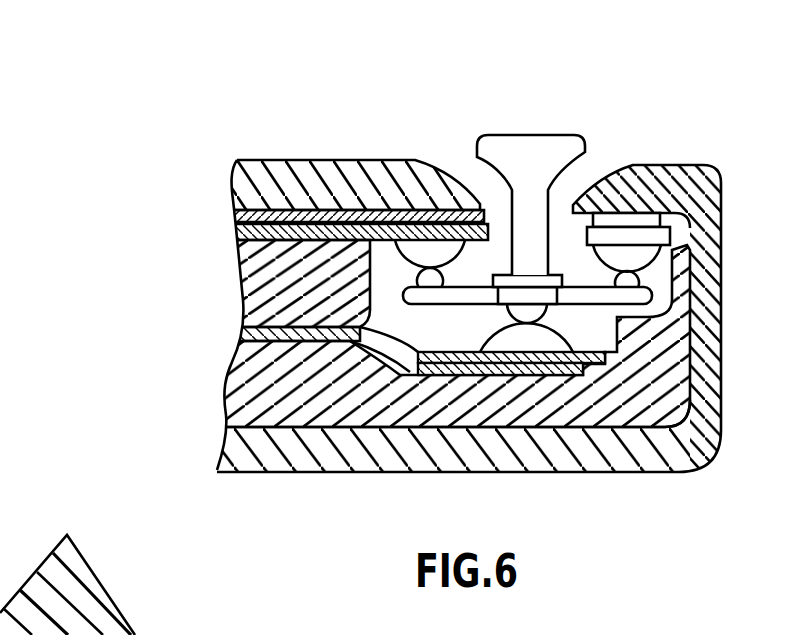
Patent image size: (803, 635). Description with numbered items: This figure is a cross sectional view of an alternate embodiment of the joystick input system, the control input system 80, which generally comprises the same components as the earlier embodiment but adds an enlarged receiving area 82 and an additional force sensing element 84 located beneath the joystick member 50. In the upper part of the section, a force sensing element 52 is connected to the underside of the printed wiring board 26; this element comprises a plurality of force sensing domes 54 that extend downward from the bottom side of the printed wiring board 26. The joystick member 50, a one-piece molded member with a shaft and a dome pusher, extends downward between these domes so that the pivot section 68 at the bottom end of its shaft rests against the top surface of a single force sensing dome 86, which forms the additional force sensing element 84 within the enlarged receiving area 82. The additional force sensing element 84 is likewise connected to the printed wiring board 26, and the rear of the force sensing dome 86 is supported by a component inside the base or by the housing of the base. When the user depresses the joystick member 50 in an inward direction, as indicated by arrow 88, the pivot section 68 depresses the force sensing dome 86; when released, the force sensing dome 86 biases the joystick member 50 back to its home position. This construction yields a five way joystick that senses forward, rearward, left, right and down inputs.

The control input system 80 is at (116, 76).
The printed wiring board 26 is at (255, 231).
The joystick member 50 is at (562, 135).
The force sensing element 52 is at (433, 257).
The force sensing domes 54 is at (527, 202).
The pivot section 68 is at (517, 308).
The enlarged receiving area 82 is at (597, 343).
The additional force sensing element 84 is at (570, 343).
The force sensing dome 86 is at (535, 340).
The arrow 88 is at (532, 18).